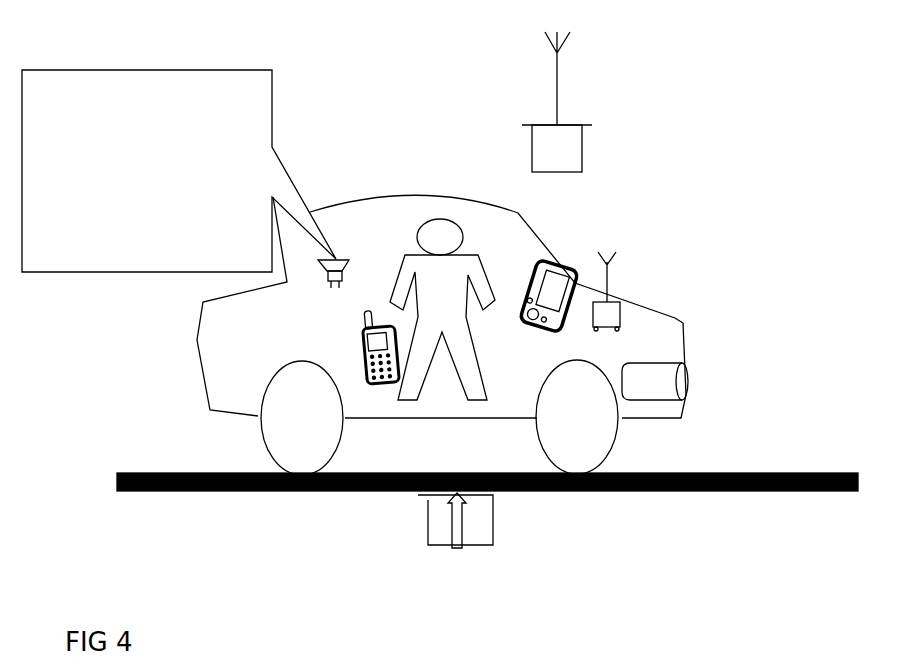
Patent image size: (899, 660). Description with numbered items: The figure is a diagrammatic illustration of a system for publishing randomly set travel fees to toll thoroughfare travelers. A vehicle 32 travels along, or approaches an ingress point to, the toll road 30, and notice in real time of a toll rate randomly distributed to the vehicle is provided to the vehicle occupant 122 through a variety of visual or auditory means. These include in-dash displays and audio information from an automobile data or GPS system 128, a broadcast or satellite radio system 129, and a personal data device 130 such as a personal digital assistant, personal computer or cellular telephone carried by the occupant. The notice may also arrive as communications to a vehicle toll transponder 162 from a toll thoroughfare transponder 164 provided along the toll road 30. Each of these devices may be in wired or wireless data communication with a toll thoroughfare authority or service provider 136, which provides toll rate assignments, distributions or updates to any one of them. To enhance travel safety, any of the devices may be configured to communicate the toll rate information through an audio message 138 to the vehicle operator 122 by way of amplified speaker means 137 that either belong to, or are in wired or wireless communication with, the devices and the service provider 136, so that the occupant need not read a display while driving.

The toll road 30 is at (723, 491).
The vehicle 32 is at (227, 398).
The vehicle occupant 122 is at (415, 258).
The automobile data or GPS system 128 is at (558, 334).
The broadcast or satellite radio system 129 is at (607, 312).
The personal data device 130 is at (383, 353).
The toll thoroughfare authority or service provider 136 is at (572, 133).
The amplified speaker means 137 is at (336, 289).
The audio message 138 is at (117, 273).
The vehicle toll transponder 162 is at (652, 400).
The toll thoroughfare transponder 164 is at (493, 545).